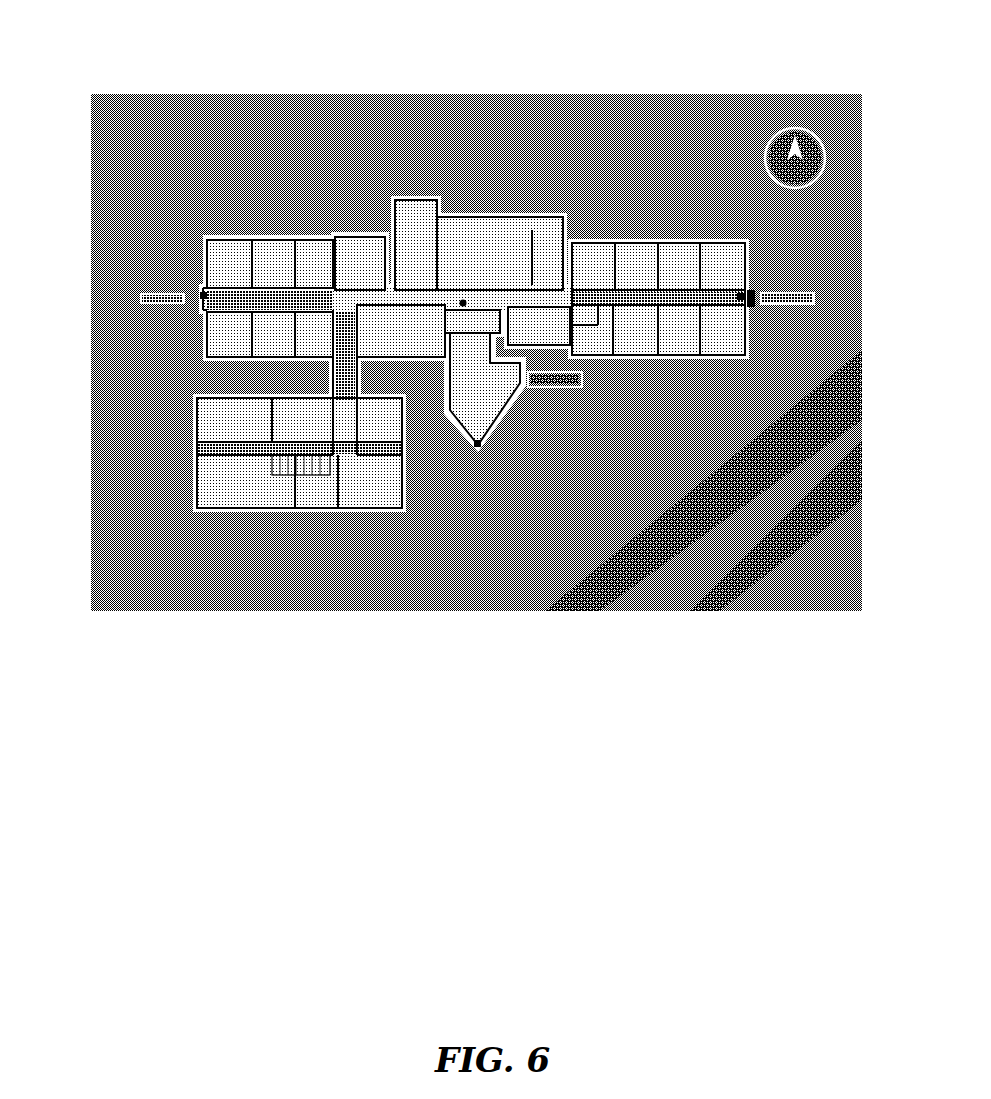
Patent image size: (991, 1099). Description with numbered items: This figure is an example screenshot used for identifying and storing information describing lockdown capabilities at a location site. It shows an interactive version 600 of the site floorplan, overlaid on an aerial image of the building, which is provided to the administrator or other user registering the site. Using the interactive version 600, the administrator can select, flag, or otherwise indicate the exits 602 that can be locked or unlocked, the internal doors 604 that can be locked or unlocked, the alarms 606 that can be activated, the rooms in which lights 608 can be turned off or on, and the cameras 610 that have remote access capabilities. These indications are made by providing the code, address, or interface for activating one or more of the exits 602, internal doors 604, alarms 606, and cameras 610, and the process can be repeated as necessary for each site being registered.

The interactive version of the floorplan 600 is at (138, 84).
The exits 602 is at (800, 295).
The internal doors 604 is at (313, 292).
The alarms 606 is at (464, 306).
The lights 608 is at (403, 323).
The cameras 610 is at (203, 293).